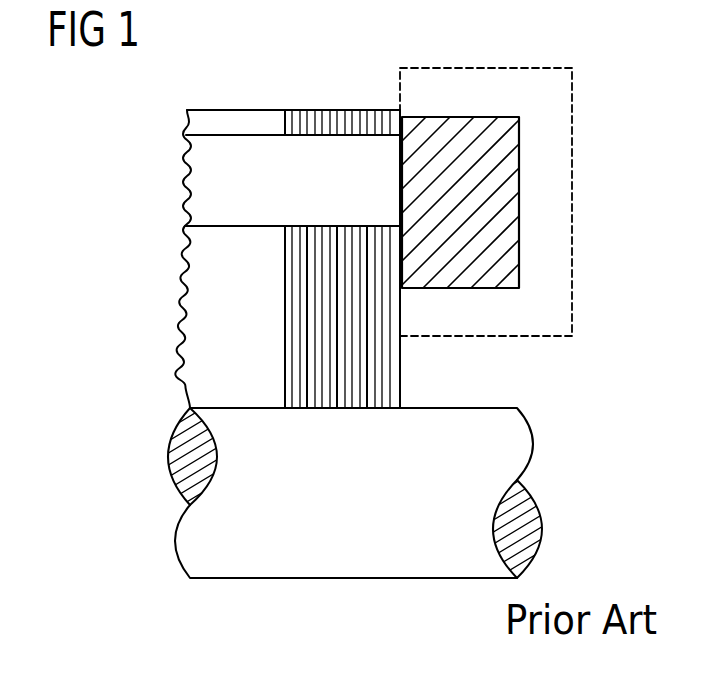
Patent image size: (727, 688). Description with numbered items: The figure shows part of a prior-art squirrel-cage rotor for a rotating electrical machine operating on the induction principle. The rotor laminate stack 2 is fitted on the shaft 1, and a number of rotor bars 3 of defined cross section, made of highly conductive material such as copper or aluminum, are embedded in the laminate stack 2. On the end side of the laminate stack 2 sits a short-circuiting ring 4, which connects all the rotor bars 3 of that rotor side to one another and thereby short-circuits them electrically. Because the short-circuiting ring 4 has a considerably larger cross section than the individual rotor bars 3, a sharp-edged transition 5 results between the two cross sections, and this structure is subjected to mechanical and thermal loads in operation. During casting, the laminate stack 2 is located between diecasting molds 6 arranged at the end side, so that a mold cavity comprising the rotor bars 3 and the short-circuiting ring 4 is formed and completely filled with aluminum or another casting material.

The shaft 1 is at (513, 433).
The rotor laminate stack 2 is at (388, 357).
The rotor bars 3 is at (197, 183).
The short-circuiting ring 4 is at (503, 170).
The sharp-edged transition 5 is at (398, 137).
The diecasting molds 6 is at (571, 93).